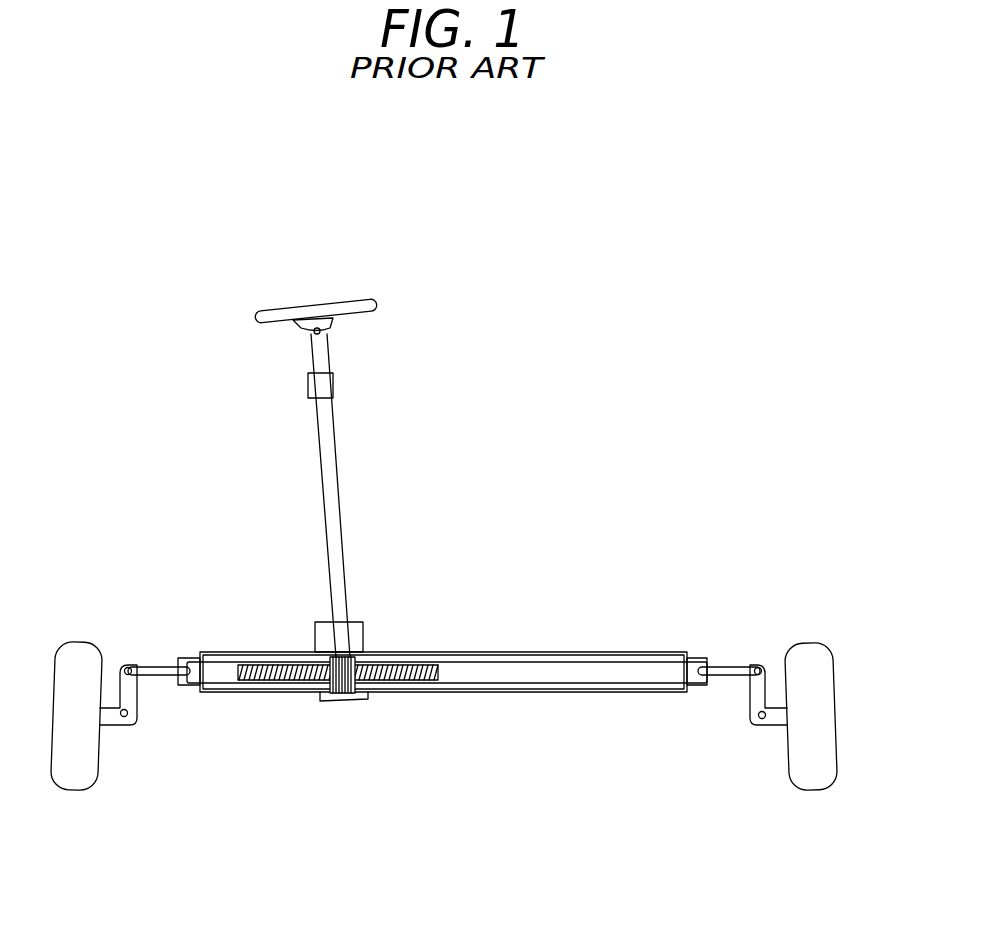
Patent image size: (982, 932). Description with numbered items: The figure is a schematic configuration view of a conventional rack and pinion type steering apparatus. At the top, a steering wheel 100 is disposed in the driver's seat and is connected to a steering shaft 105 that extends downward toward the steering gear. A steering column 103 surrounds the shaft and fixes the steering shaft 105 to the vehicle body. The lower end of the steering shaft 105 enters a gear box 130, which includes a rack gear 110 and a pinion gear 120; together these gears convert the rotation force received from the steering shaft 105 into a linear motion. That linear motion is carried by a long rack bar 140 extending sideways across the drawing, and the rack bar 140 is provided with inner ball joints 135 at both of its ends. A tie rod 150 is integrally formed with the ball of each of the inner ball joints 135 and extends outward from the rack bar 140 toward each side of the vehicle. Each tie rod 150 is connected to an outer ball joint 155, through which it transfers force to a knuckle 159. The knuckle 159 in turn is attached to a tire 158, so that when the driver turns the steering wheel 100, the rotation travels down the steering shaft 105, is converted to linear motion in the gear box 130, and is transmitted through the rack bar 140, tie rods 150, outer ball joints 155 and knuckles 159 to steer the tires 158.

The steering wheel 100 is at (370, 296).
The steering column 103 is at (336, 383).
The steering shaft 105 is at (330, 478).
The rack gear 110 is at (438, 682).
The pinion gear 120 is at (330, 703).
The gear box 130 is at (365, 636).
The inner ball joint 135 is at (187, 658).
The rack bar 140 is at (592, 675).
The tie rod 150 is at (160, 667).
The outer ball joint 155 is at (127, 667).
The tire 158 is at (72, 642).
The knuckle 159 is at (137, 690).